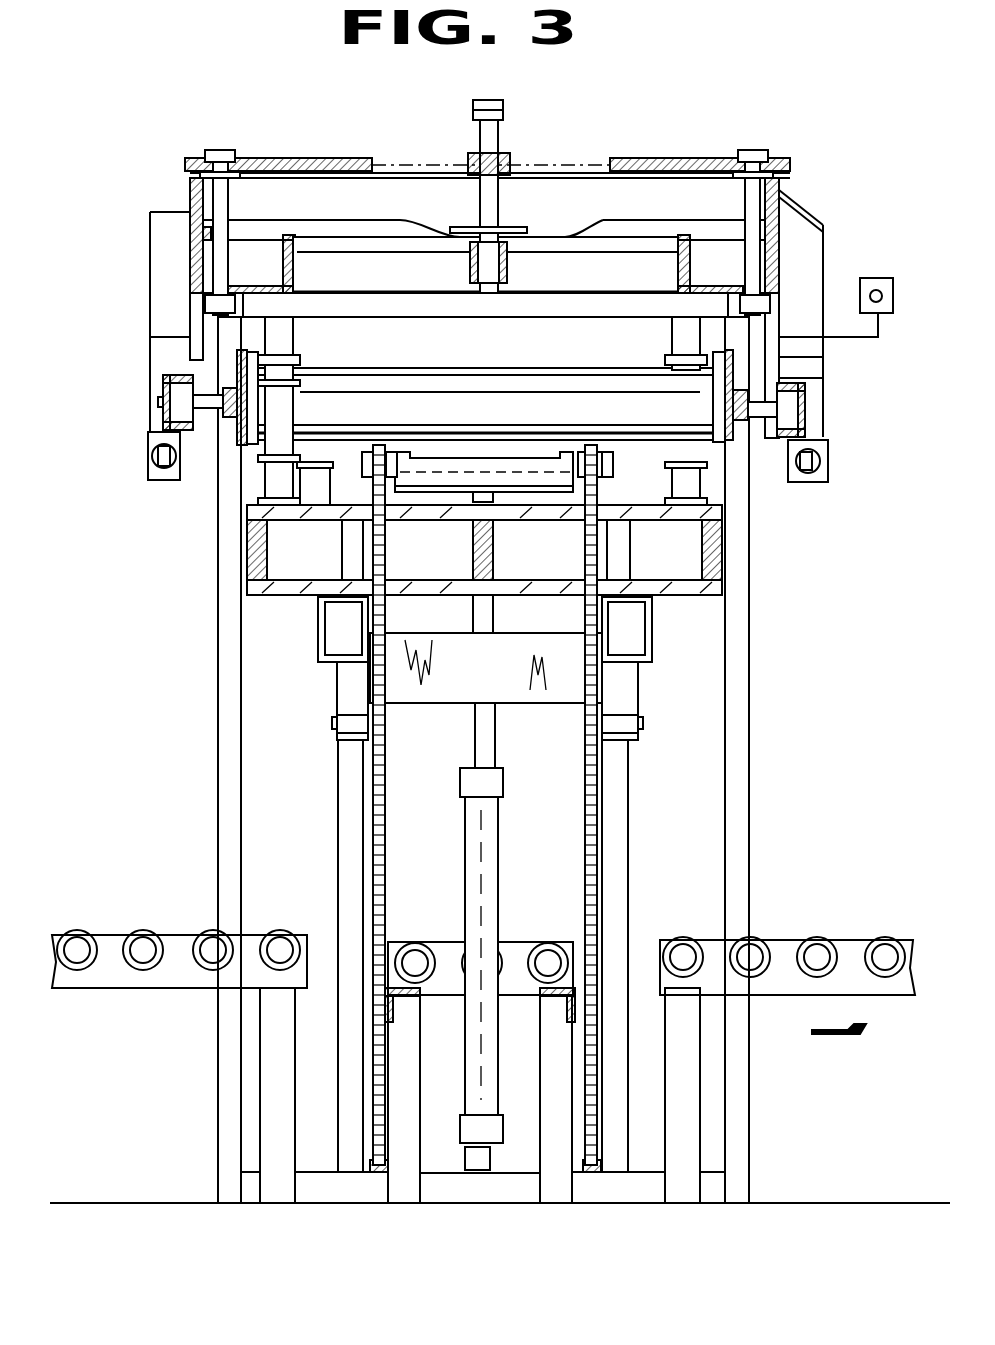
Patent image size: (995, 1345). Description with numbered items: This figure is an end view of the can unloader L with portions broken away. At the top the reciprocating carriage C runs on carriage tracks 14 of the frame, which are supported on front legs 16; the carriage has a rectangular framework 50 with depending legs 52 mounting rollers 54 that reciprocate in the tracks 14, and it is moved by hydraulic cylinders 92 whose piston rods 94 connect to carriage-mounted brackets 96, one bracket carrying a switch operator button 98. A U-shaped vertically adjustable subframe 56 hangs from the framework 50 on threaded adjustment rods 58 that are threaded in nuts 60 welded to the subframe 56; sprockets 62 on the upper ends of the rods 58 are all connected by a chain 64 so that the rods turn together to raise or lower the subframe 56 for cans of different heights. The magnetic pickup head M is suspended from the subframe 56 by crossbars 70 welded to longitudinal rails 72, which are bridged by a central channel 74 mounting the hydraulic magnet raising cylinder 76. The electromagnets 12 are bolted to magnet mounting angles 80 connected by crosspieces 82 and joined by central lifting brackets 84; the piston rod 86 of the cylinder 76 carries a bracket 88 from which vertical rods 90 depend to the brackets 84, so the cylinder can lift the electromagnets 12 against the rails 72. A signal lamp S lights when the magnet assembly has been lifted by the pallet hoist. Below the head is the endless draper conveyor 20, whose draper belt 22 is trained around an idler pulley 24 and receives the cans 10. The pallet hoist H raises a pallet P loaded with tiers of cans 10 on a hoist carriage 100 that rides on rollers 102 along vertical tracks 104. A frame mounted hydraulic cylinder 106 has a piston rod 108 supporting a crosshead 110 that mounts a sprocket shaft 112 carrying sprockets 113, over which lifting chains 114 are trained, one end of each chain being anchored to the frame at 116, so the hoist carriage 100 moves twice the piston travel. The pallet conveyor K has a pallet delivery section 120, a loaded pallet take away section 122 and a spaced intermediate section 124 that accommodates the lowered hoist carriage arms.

The cans 10 is at (293, 333).
The electromagnets 12 is at (523, 307).
The carriage tracks 14 is at (240, 435).
The front legs 16 is at (218, 696).
The endless draper conveyor 20 is at (571, 415).
The draper belt 22 is at (478, 409).
The idler pulley 24 is at (790, 378).
The rectangular framework 50 is at (805, 210).
The depending legs 52 is at (190, 337).
The rollers 54 is at (223, 392).
The vertically adjustable subframe 56 is at (200, 255).
The threaded adjustment rods 58 is at (210, 188).
The nuts 60 is at (205, 303).
The sprockets 62 is at (215, 152).
The chain 64 is at (312, 160).
The crossbars 70 is at (262, 280).
The longitudinal rails 72 is at (290, 240).
The central channel 74 is at (585, 228).
The hydraulic magnet raising cylinder 76 is at (510, 163).
The magnet mounting angles 80 is at (297, 268).
The crosspieces 82 is at (392, 288).
The central lifting brackets 84 is at (507, 268).
The piston rod 86 is at (500, 140).
The bracket 88 is at (476, 110).
The vertical rods 90 is at (500, 196).
The hydraulic cylinders 92 is at (148, 436).
The piston rods 94 is at (160, 462).
The carriage-mounted brackets 96 is at (162, 472).
The switch operator button 98 is at (836, 462).
The hoist carriage 100 is at (455, 679).
The rollers 102 is at (340, 740).
The vertical tracks 104 is at (340, 803).
The hydraulic cylinder 106 is at (465, 852).
The piston rod 108 is at (495, 736).
The crosshead 110 is at (485, 468).
The sprocket shaft 112 is at (432, 512).
The sprockets 113 is at (362, 460).
The lifting chains 114 is at (386, 568).
The frame anchor 116 is at (375, 1168).
The pallet delivery section 120 is at (800, 993).
The loaded pallet take away section 122 is at (103, 980).
The intermediate section 124 is at (517, 945).
The reciprocating carriage C is at (481, 252).
The unloader L is at (446, 251).
The magnetic pickup head M is at (440, 312).
The pallet P is at (250, 556).
The pallet hoist H is at (438, 883).
The pallet conveyor K is at (483, 956).
The signal lamp S is at (880, 278).